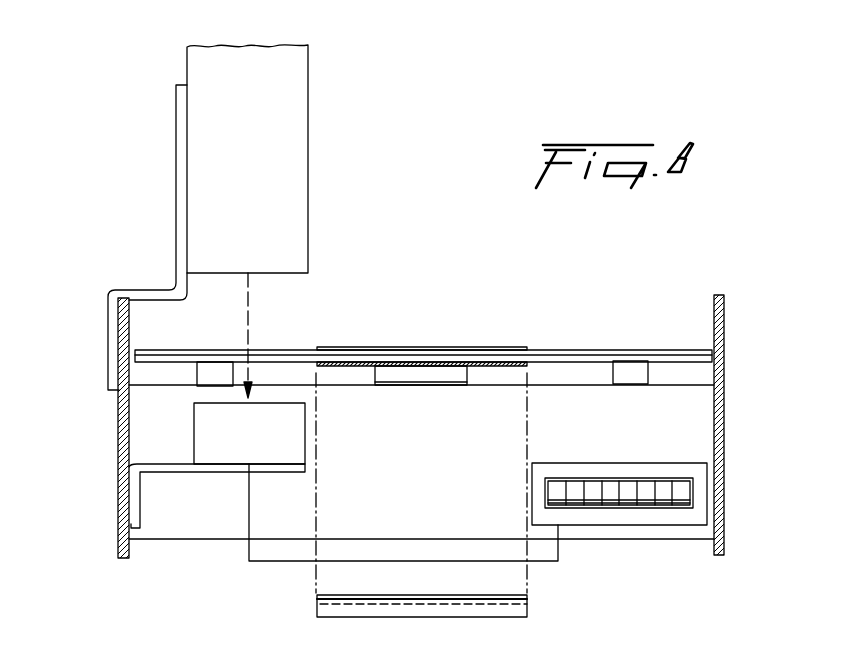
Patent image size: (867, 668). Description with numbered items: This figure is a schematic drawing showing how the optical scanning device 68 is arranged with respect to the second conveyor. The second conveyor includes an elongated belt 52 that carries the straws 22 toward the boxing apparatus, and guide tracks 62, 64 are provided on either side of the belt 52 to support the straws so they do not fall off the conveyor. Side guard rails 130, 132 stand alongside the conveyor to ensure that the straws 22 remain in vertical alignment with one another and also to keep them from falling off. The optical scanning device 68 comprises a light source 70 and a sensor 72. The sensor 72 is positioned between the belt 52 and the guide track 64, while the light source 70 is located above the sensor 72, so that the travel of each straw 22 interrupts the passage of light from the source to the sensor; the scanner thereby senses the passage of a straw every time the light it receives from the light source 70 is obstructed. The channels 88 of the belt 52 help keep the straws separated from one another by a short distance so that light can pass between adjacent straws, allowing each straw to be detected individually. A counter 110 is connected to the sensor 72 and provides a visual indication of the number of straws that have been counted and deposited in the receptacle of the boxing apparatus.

The straw 22 is at (573, 352).
The belt 52 is at (490, 367).
The guide track 62 is at (642, 370).
The guide track 64 is at (203, 370).
The optical scanning device 68 is at (315, 143).
The light source 70 is at (297, 127).
The sensor 72 is at (205, 432).
The channels 88 is at (430, 346).
The counter 110 is at (640, 517).
The side guard rail 130 is at (725, 322).
The side guard rail 132 is at (124, 331).